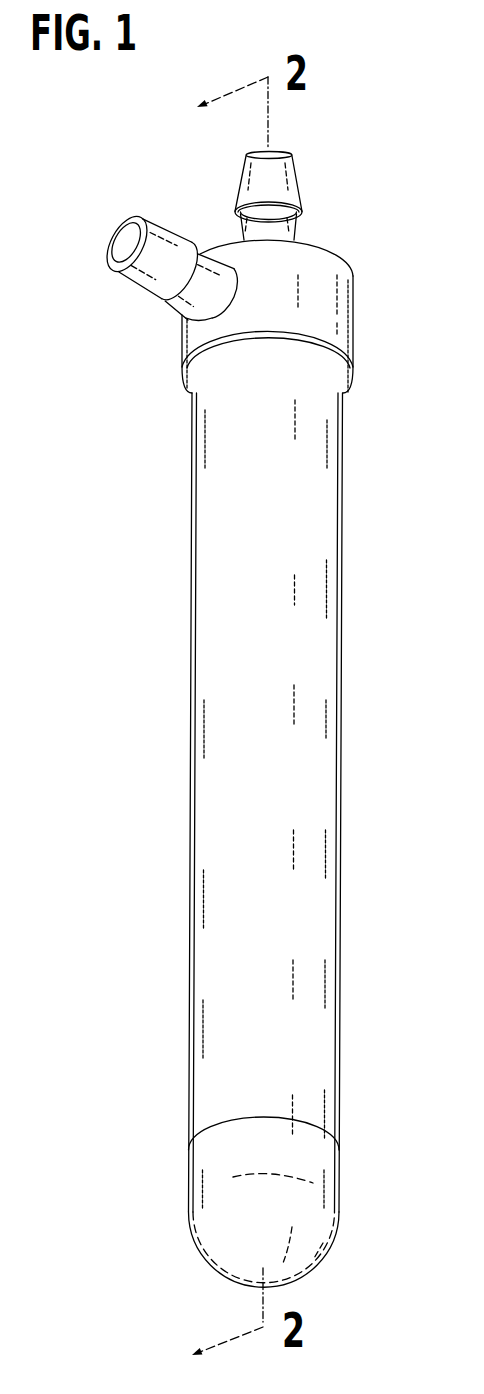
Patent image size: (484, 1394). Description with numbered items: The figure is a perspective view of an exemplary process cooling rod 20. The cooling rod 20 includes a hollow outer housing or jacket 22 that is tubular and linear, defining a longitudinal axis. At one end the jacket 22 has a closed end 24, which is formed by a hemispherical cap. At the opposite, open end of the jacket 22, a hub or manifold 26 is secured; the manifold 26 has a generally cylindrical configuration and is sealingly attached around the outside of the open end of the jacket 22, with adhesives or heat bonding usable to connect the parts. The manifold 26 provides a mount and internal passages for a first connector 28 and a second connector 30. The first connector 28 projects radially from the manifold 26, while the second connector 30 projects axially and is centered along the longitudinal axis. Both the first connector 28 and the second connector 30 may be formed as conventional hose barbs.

The process cooling rod 20 is at (158, 1080).
The outer housing or jacket 22 is at (191, 693).
The closed end 24 is at (317, 1257).
The hub or manifold 26 is at (353, 310).
The first connector 28 is at (130, 268).
The second connector 30 is at (298, 190).